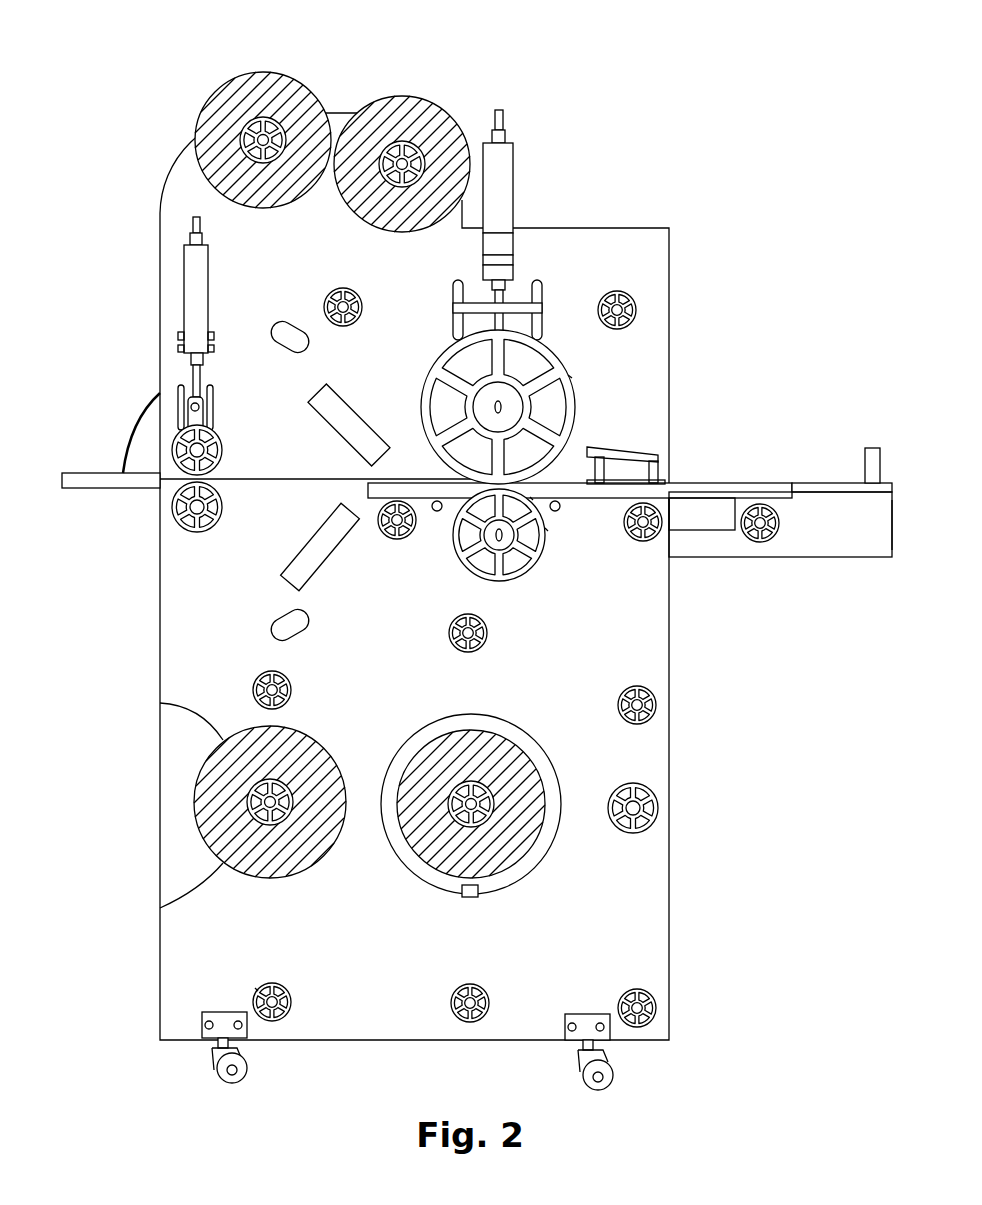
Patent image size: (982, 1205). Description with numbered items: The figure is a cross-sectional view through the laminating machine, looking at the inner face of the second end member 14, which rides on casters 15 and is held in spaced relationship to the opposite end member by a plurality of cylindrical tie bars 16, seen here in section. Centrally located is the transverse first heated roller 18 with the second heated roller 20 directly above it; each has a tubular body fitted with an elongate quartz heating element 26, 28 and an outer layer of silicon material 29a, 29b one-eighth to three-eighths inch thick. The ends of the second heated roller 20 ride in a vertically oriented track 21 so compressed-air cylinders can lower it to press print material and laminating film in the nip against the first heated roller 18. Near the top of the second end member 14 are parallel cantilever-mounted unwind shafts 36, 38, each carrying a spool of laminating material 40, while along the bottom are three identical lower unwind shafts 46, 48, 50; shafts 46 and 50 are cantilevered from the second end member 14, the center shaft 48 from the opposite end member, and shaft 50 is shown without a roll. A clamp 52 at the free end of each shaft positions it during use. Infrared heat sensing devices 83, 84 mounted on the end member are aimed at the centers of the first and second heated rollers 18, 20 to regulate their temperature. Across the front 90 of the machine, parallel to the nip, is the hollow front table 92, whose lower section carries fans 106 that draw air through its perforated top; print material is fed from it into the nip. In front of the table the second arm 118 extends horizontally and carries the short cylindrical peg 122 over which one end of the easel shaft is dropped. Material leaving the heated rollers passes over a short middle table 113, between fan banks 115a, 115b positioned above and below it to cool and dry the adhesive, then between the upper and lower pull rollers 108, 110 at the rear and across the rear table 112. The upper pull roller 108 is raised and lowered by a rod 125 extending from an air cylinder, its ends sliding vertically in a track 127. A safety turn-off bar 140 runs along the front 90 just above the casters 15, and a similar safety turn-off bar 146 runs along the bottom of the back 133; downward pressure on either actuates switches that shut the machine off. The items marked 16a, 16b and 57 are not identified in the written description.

The second end member 14 is at (640, 227).
The casters 15 is at (212, 1060).
The cylindrical tie bars 16 is at (657, 535).
The pneumatic cylinder 16a is at (183, 248).
The guide roller 16b is at (453, 642).
The first heated roller 18 is at (543, 547).
The second heated roller 20 is at (577, 397).
The longitudinal track 21 is at (537, 283).
The quartz heating element 26 is at (530, 497).
The quartz heating element 28 is at (498, 407).
The silicon material layer 29a is at (545, 528).
The silicon material layer 29b is at (568, 375).
The unwind shaft 36 is at (242, 133).
The unwind shaft 38 is at (424, 150).
The roll of laminating material 40 is at (213, 92).
The lower unwind shaft 46 is at (247, 797).
The center unwind shaft 48 is at (495, 800).
The lower unwind shaft 50 is at (657, 820).
The clamp 52 is at (480, 897).
The reel flange ring 57 is at (536, 866).
The first infrared heat sensing device 83 is at (293, 641).
The second infrared heat sensing device 84 is at (279, 349).
The front of the machine 90 is at (668, 798).
The front table 92 is at (783, 483).
The fan 106 is at (713, 530).
The upper pull roller 108 is at (172, 447).
The lower pull roller 110 is at (198, 533).
The rear table 112 is at (62, 485).
The short middle table 113 is at (325, 303).
The fan bank 115a is at (302, 545).
The fan bank 115b is at (357, 411).
The second arm 118 is at (893, 527).
The second cylindrical peg 122 is at (872, 448).
The rod 125 is at (193, 375).
The track 127 is at (178, 404).
The back of the machine 133 is at (158, 960).
The safety turn off bar 140 is at (652, 996).
The safety turn off bar 146 is at (258, 988).